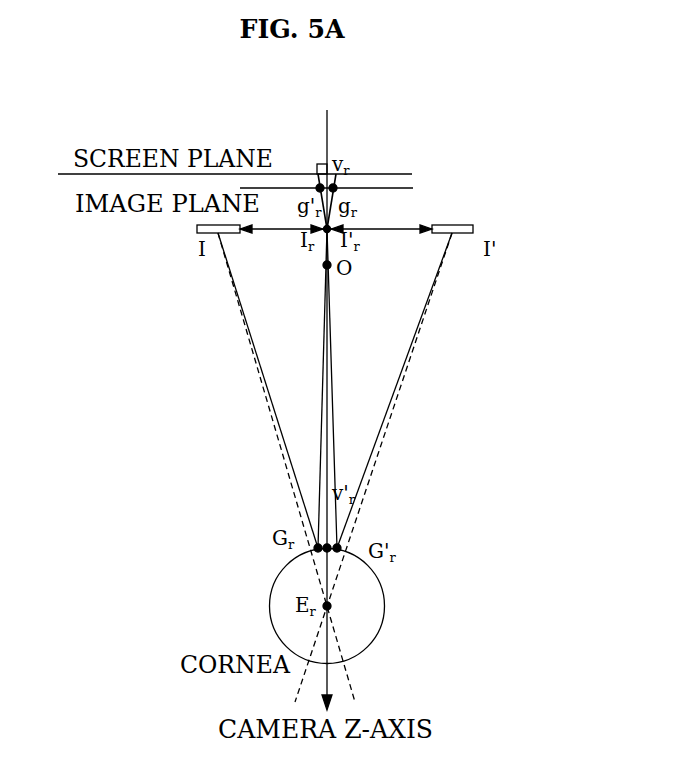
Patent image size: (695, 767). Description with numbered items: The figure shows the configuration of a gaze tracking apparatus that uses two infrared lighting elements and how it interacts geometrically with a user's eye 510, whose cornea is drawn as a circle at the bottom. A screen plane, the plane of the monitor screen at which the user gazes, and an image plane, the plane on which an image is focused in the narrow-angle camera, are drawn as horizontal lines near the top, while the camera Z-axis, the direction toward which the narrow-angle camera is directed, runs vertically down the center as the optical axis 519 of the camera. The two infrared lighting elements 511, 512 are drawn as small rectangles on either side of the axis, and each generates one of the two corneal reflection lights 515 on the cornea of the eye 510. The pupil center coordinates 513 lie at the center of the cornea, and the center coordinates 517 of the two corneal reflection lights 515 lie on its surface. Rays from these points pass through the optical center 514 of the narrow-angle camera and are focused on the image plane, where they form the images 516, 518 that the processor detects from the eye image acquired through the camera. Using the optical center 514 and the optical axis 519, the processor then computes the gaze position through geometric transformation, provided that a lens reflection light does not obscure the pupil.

The eye 510 is at (370, 650).
The infrared lighting element 511 is at (197, 229).
The infrared lighting element 512 is at (455, 226).
The pupil center coordinates 513 is at (331, 606).
The optical center 514 is at (326, 267).
The corneal reflection lights 515 is at (316, 550).
The image 516 is at (318, 184).
The center coordinates 517 is at (340, 545).
The image 518 is at (319, 186).
The optical axis 519 is at (332, 229).